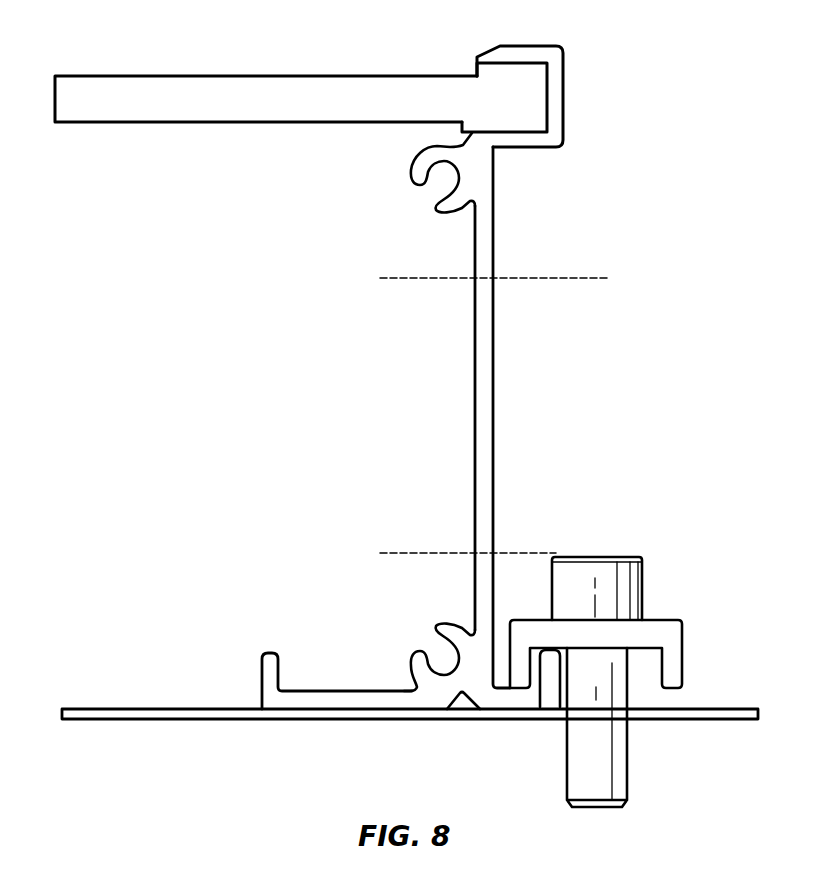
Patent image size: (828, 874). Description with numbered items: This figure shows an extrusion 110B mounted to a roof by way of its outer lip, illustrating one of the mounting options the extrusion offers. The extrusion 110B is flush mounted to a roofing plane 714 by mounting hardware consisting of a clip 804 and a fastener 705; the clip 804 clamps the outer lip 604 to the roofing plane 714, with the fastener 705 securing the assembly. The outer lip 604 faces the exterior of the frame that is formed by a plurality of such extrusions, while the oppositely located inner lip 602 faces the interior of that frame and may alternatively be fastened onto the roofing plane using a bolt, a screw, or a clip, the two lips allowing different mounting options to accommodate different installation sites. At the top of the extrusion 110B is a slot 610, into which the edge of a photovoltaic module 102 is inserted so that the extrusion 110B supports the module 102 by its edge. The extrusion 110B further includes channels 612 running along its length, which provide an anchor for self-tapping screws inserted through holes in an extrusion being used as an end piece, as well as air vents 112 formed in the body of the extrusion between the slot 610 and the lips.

The photovoltaic module 102 is at (133, 76).
The slot 610 is at (563, 93).
The air vents 112 is at (493, 380).
The channels 612 is at (440, 182).
The inner lip 602 is at (345, 690).
The roofing plane 714 is at (162, 709).
The fastener 705 is at (622, 557).
The clip 804 is at (675, 658).
The outer lip 604 is at (535, 697).
The extrusion 110B is at (631, 299).